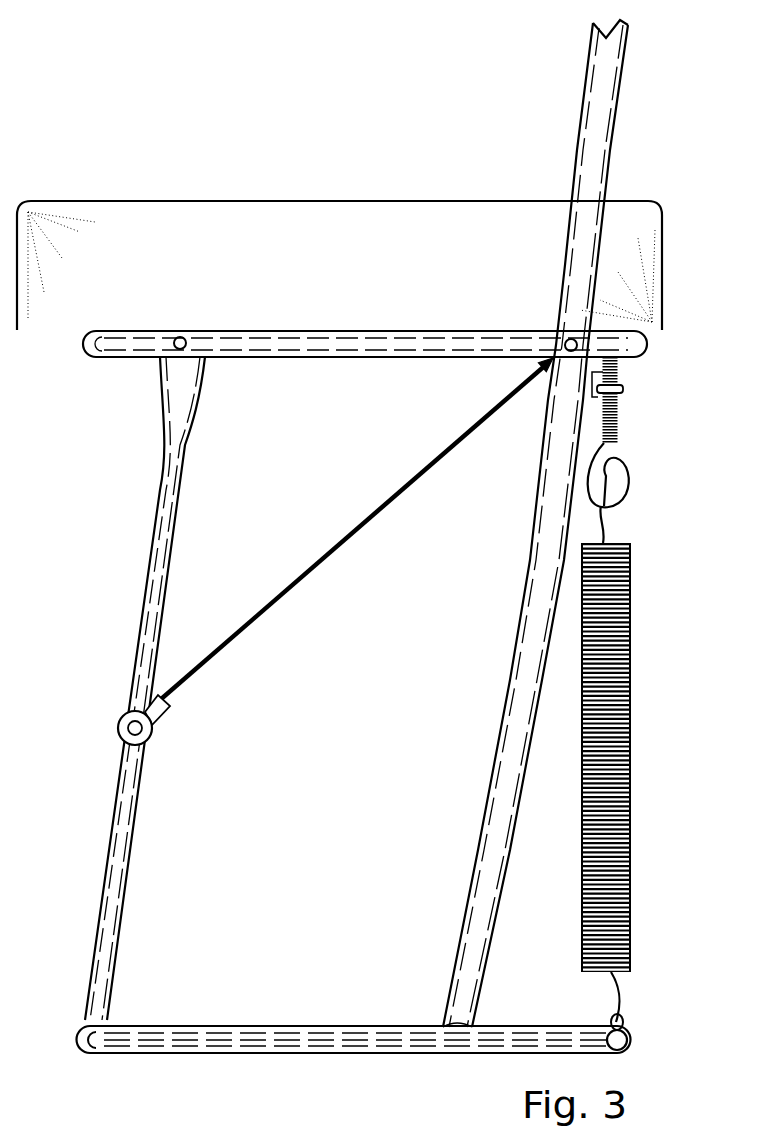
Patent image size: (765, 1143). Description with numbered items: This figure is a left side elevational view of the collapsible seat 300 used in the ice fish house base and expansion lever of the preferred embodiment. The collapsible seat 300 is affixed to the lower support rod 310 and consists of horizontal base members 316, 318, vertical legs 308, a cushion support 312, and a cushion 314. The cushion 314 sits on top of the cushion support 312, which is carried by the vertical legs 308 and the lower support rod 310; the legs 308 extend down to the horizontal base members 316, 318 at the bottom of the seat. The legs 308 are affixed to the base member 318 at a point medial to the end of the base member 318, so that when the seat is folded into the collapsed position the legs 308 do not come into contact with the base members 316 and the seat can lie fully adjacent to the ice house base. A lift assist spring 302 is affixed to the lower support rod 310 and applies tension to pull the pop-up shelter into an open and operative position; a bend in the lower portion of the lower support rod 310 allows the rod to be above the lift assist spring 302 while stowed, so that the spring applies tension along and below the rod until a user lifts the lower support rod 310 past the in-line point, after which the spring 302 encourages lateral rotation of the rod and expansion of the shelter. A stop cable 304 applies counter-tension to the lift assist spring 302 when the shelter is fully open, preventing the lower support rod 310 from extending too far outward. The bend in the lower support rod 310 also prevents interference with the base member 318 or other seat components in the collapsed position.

The collapsible seat 300 is at (237, 135).
The lift assist spring 302 is at (630, 715).
The stop cable 304 is at (362, 520).
The vertical legs 308 is at (125, 815).
The lower support rod 310 is at (512, 768).
The cushion support 312 is at (100, 362).
The cushion 314 is at (104, 210).
The horizontal base member 316 is at (252, 1050).
The horizontal base member 318 is at (70, 1058).